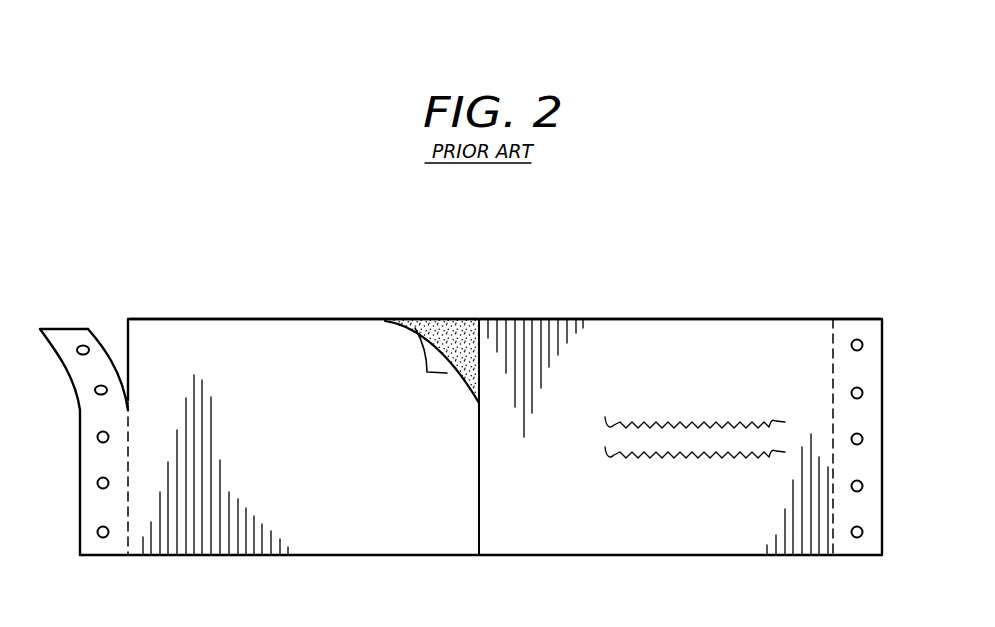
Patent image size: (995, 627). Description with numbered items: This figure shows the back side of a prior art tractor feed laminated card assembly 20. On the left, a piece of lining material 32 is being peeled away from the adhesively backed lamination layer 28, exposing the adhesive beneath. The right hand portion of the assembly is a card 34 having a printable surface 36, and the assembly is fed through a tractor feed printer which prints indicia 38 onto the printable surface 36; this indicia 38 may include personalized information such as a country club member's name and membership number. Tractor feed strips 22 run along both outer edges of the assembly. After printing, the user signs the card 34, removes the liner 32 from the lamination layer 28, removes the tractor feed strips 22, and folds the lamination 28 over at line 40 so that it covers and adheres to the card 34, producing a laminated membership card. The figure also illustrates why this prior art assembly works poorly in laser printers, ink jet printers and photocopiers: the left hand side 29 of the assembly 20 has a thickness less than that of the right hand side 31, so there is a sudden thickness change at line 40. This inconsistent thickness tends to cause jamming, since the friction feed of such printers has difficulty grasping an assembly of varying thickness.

The prior art assembly 20 is at (465, 292).
The tractor feed strips 22 is at (58, 335).
The adhesively backed lamination layer 28 is at (443, 335).
The left hand side 29 is at (571, 543).
The right hand side 31 is at (353, 545).
The lining material 32 is at (282, 345).
The card 34 is at (618, 308).
The printable surface 36 is at (707, 340).
The indicia 38 is at (777, 406).
The fold line 40 is at (479, 545).